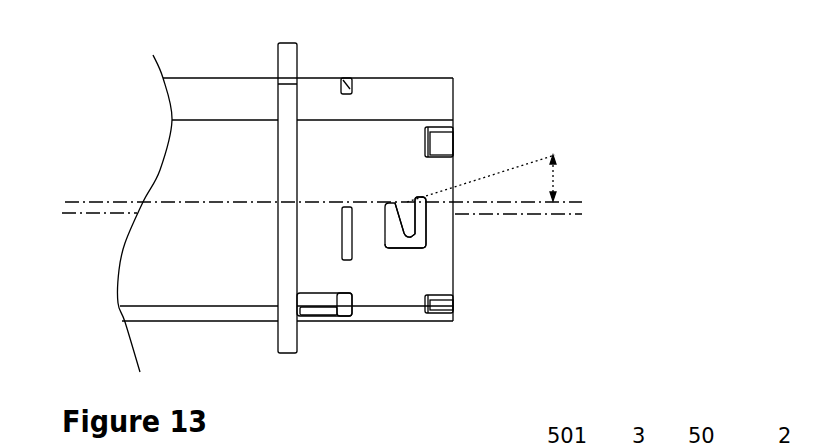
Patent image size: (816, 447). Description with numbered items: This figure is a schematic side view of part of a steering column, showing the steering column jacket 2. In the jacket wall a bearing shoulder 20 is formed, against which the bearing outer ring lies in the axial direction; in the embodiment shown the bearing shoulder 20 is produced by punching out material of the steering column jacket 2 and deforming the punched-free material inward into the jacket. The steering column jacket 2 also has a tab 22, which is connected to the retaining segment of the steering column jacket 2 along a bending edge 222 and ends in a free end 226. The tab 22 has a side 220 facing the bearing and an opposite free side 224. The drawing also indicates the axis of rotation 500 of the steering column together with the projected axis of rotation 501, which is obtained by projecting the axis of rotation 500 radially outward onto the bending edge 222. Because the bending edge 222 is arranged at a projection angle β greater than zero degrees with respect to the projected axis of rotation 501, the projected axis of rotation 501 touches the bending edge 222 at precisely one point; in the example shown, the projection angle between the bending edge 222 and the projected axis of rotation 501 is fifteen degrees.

The steering column jacket 2 is at (225, 98).
The bearing shoulder 20 is at (345, 240).
The tab 22 is at (421, 222).
The side facing the bearing 220 is at (404, 235).
The bending edge 222 is at (404, 222).
The free side 224 is at (421, 215).
The free end 226 is at (404, 222).
The axis of rotation 500 is at (528, 215).
The projected axis of rotation 501 is at (568, 202).